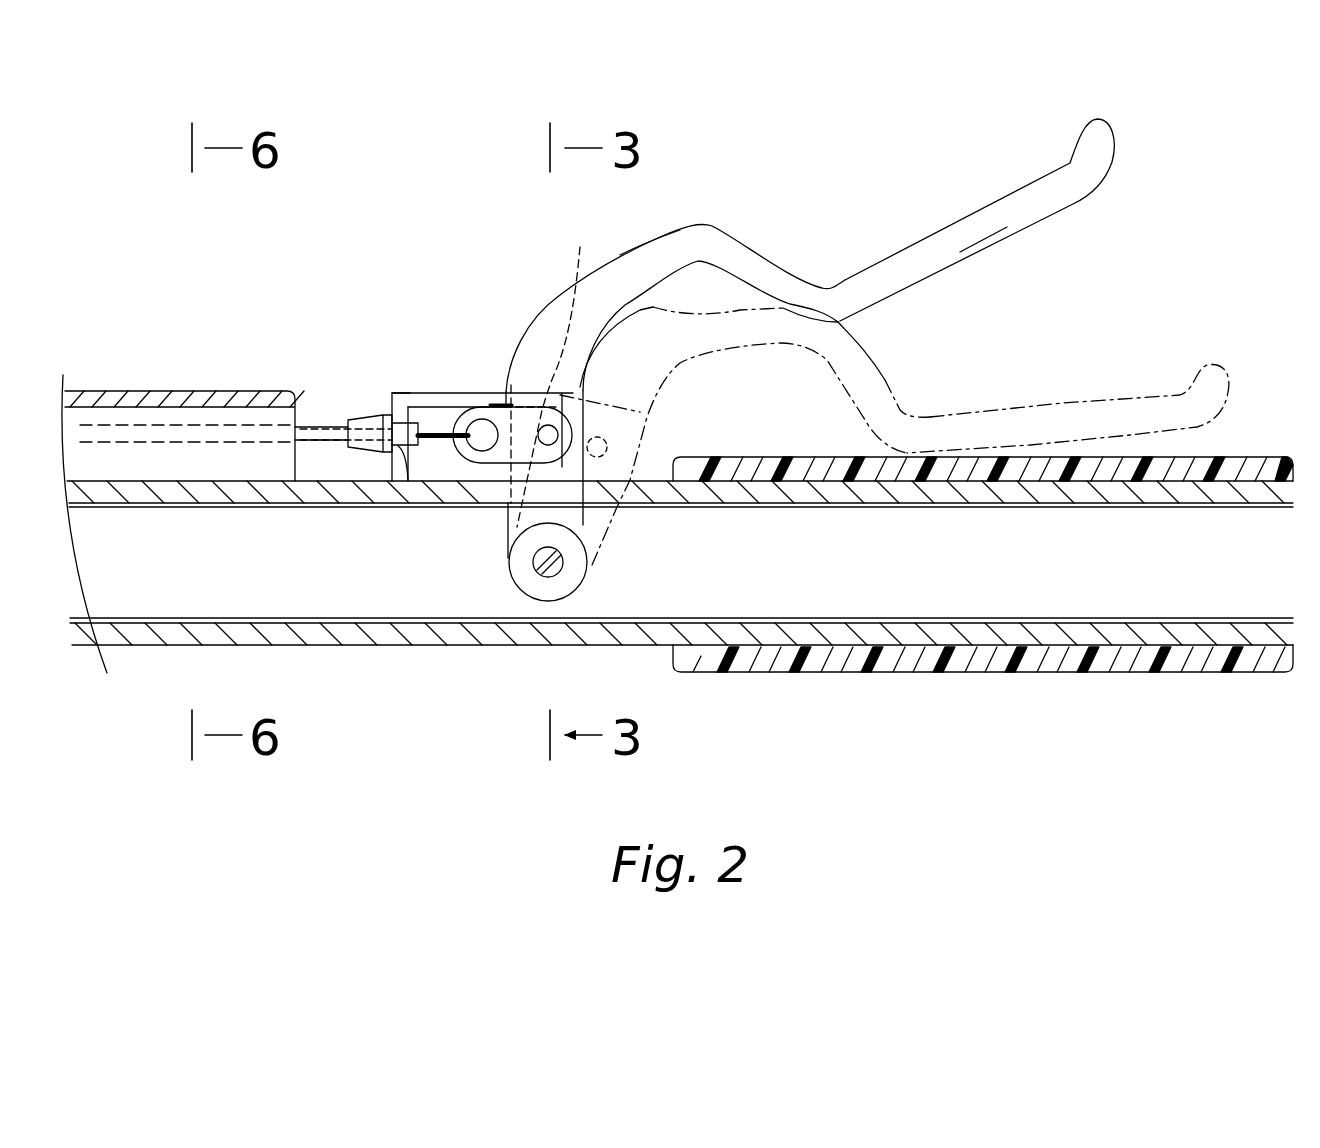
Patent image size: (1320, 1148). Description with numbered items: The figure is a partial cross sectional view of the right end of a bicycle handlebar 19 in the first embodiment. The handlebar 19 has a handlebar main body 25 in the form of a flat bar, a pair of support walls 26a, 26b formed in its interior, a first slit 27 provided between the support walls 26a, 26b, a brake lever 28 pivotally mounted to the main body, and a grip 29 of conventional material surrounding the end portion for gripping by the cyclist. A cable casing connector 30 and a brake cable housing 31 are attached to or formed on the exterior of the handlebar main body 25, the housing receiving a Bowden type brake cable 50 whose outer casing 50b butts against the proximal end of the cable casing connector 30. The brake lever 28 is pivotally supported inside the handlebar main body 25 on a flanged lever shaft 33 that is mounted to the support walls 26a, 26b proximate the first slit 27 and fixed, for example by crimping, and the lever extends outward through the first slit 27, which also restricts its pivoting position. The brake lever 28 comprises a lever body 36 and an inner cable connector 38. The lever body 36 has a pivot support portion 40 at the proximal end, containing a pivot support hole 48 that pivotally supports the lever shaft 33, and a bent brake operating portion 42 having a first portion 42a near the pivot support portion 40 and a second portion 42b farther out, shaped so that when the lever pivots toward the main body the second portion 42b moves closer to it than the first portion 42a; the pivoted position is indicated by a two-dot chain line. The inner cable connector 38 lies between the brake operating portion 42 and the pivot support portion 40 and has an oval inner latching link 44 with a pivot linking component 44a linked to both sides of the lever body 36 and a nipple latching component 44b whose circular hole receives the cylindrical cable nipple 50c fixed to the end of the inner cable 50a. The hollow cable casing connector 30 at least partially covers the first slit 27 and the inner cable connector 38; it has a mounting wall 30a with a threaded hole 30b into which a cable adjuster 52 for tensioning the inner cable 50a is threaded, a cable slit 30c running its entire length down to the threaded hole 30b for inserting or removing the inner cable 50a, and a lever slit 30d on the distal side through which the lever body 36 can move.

The handlebar 19 is at (858, 439).
The handlebar main body 25 is at (1142, 645).
The support wall 26a is at (952, 593).
The support wall 26b is at (796, 630).
The first slit 27 is at (625, 497).
The brake lever 28 is at (869, 205).
The grip 29 is at (1022, 470).
The cable casing connector 30 is at (407, 382).
The mounting wall 30a is at (391, 402).
The threaded hole 30b is at (399, 449).
The cable slit 30c is at (484, 403).
The lever slit 30d is at (578, 369).
The brake cable housing 31 is at (207, 384).
The lever shaft 33 is at (560, 568).
The lever body 36 is at (790, 263).
The inner cable connector 38 is at (507, 392).
The pivot support portion 40 is at (506, 589).
The brake operating portion 42 is at (990, 198).
The first portion 42a is at (660, 250).
The second portion 42b is at (1007, 227).
The inner latching link 44 is at (709, 335).
The pivot linking component 44a is at (558, 430).
The nipple latching component 44b is at (498, 442).
The pivot support hole 48 is at (533, 560).
The brake cable 50 is at (323, 409).
The inner cable 50a is at (433, 423).
The outer casing 50b is at (307, 430).
The cable nipple 50c is at (485, 445).
The cable adjuster 52 is at (360, 415).